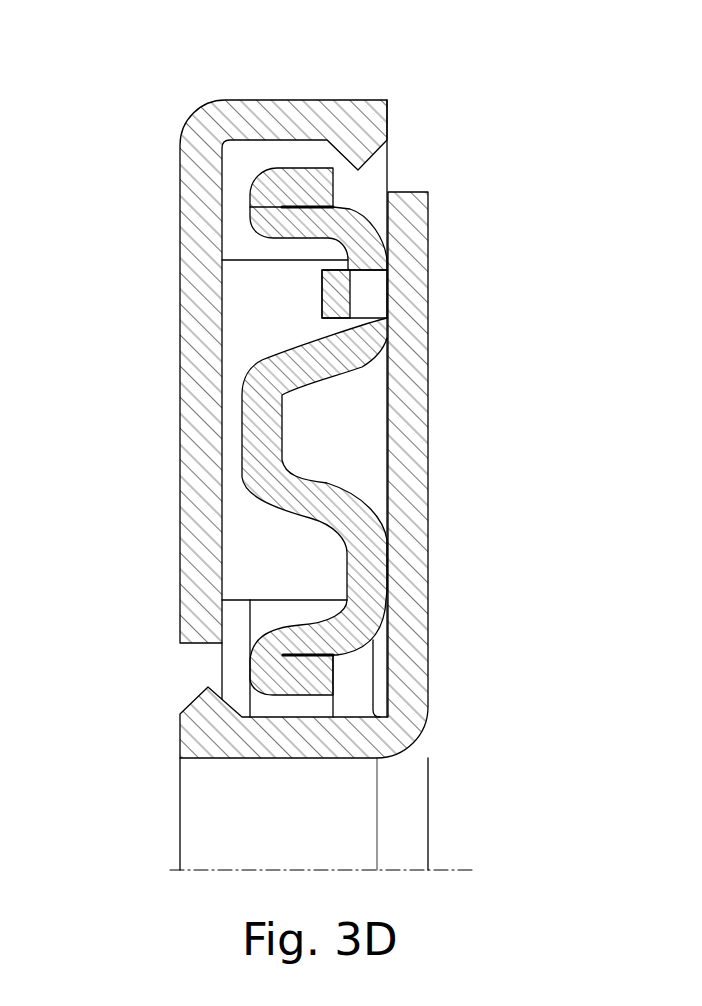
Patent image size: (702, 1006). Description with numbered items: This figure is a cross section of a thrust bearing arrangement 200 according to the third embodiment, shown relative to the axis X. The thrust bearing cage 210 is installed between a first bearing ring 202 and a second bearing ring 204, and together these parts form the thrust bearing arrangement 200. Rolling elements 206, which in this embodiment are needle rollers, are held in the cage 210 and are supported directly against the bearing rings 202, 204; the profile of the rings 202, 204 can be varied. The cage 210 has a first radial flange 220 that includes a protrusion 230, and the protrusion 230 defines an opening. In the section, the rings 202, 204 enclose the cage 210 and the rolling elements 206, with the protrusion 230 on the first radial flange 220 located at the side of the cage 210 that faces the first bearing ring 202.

The thrust bearing arrangement 200 is at (190, 104).
The first bearing ring 202 is at (413, 215).
The second bearing ring 204 is at (205, 362).
The rolling elements 206 is at (262, 301).
The thrust bearing cage 210 is at (298, 177).
The first radial flange 220 is at (345, 220).
The protrusion 230 is at (337, 290).
The axis X is at (460, 868).